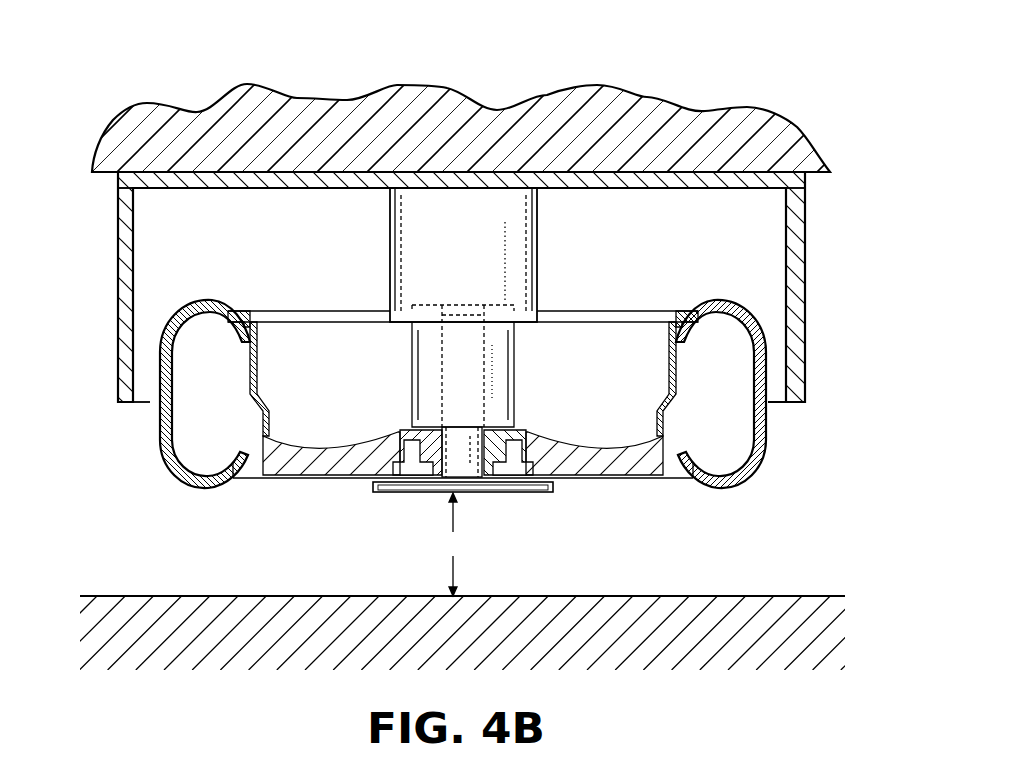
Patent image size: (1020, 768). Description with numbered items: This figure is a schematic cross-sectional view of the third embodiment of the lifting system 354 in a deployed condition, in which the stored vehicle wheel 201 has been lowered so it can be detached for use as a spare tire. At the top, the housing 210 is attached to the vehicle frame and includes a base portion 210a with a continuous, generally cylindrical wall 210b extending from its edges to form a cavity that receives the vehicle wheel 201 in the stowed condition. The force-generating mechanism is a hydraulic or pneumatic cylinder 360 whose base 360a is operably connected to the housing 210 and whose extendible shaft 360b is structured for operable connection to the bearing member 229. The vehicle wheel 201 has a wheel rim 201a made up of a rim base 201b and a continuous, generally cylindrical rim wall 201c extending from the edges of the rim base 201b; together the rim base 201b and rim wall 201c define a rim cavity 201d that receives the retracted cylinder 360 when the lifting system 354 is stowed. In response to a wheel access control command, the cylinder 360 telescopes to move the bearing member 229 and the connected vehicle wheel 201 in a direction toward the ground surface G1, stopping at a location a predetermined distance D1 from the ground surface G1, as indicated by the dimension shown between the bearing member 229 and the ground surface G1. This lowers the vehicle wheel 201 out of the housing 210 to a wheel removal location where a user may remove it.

The lifting system 354 is at (650, 92).
The housing 210 is at (419, 263).
The base portion 210a is at (260, 172).
The wall 210b is at (128, 403).
The cylinder 360 is at (507, 253).
The base 360a is at (540, 223).
The extendible shaft 360b is at (467, 453).
The vehicle wheel 201 is at (535, 374).
The wheel rim 201a is at (641, 473).
The rim base 201b is at (587, 462).
The rim wall 201c is at (677, 369).
The rim cavity 201d is at (305, 352).
The bearing member 229 is at (422, 493).
The ground surface G1 is at (790, 596).
The predetermined distance D1 is at (453, 544).